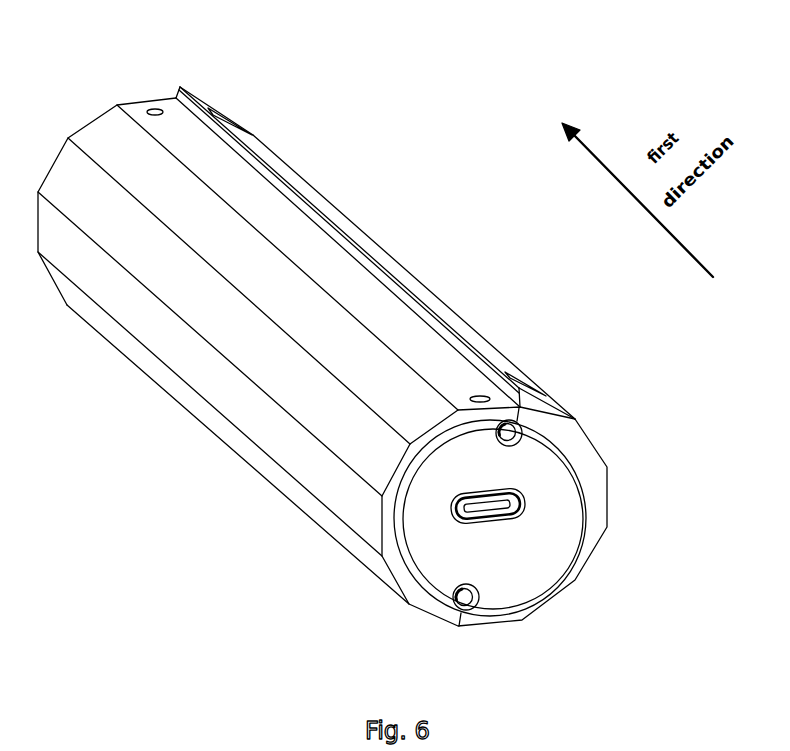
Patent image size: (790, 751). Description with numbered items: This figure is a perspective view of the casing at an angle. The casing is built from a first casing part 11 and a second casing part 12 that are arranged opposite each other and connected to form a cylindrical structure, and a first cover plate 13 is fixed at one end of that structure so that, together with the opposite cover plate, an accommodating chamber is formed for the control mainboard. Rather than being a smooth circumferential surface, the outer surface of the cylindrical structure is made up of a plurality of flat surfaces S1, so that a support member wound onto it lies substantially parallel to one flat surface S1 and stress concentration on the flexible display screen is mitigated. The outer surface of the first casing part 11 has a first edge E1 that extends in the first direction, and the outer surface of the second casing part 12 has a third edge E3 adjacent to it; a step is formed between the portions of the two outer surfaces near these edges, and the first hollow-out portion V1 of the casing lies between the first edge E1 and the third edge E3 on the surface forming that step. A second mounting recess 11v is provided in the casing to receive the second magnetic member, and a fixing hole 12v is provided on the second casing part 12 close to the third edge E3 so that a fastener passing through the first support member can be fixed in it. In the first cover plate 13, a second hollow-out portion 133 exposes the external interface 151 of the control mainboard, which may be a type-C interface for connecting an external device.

The first casing part 11 is at (576, 436).
The second casing part 12 is at (423, 605).
The first cover plate 13 is at (425, 483).
The external interface 151 is at (452, 522).
The second hollow-out portion 133 is at (521, 519).
The second mounting recess 11v is at (240, 121).
The fixing hole 12v is at (157, 110).
The first edge E1 is at (361, 249).
The third edge E3 is at (312, 221).
The first hollow-out portion V1 is at (401, 296).
The flat surface S1 is at (447, 313).